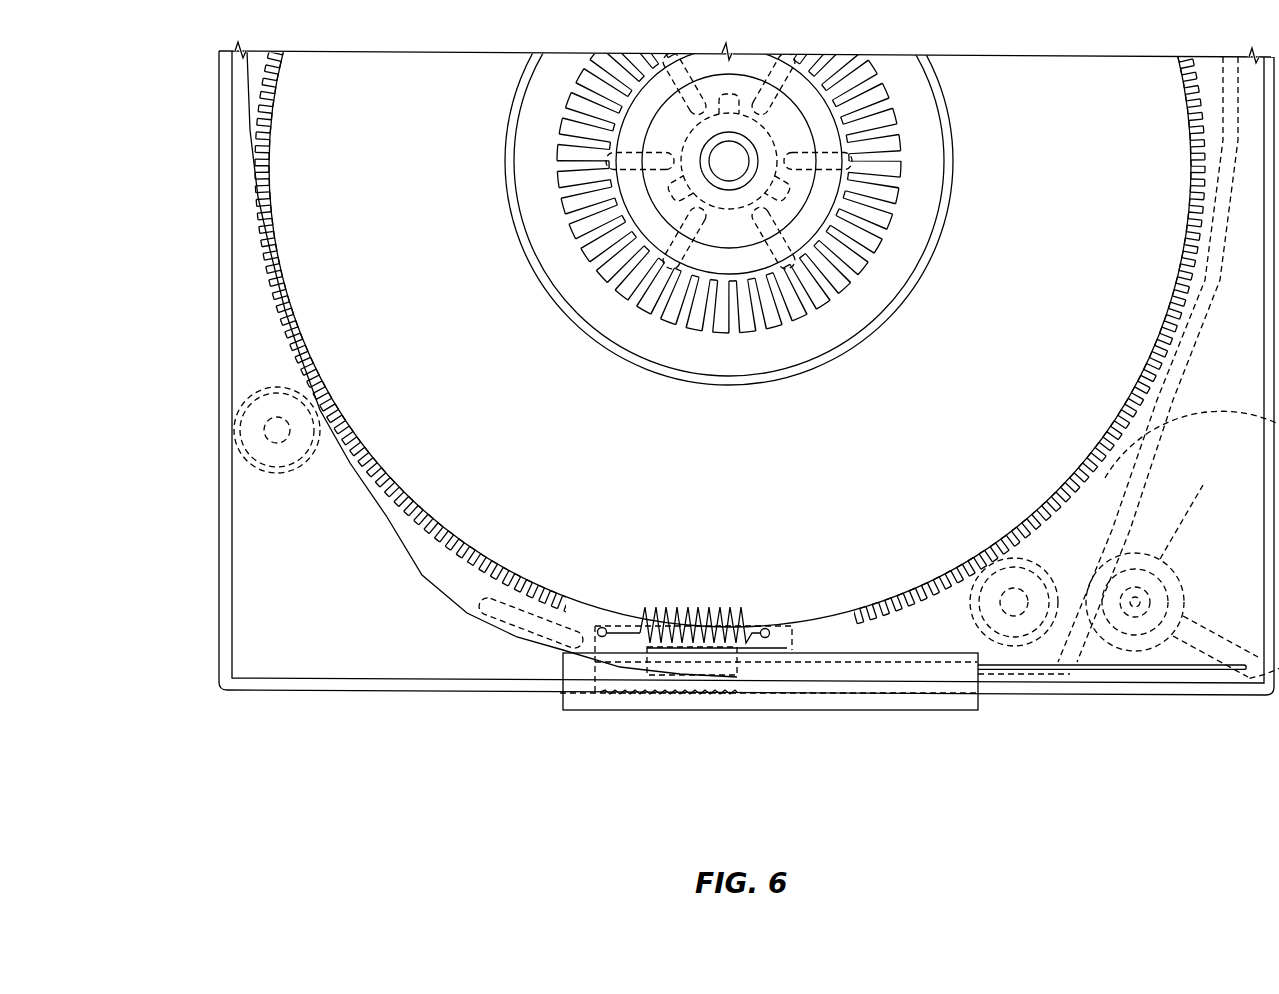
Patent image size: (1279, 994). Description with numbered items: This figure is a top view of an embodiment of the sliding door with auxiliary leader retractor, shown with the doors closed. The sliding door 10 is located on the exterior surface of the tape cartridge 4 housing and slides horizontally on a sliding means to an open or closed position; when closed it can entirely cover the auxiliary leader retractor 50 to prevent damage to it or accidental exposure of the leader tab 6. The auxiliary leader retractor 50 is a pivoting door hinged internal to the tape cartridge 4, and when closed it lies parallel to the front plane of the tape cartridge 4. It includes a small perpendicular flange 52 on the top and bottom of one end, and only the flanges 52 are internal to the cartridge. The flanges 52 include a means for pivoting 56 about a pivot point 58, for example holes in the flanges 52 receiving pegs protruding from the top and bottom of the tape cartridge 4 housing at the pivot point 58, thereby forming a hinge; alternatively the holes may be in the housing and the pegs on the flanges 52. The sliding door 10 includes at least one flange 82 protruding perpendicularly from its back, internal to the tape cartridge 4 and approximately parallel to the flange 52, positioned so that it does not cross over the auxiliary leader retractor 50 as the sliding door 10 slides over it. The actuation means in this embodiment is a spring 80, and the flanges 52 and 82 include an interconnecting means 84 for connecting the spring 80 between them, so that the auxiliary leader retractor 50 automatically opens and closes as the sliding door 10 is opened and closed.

The tape cartridge 4 is at (219, 500).
The leader tab 6 is at (422, 575).
The sliding door 10 is at (912, 711).
The auxiliary leader retractor 50 is at (680, 684).
The flange 52 is at (627, 640).
The means for pivoting 56 is at (621, 668).
The pivot point 58 is at (597, 711).
The spring 80 is at (722, 607).
The flange 82 is at (787, 647).
The interconnecting means 84 is at (768, 629).